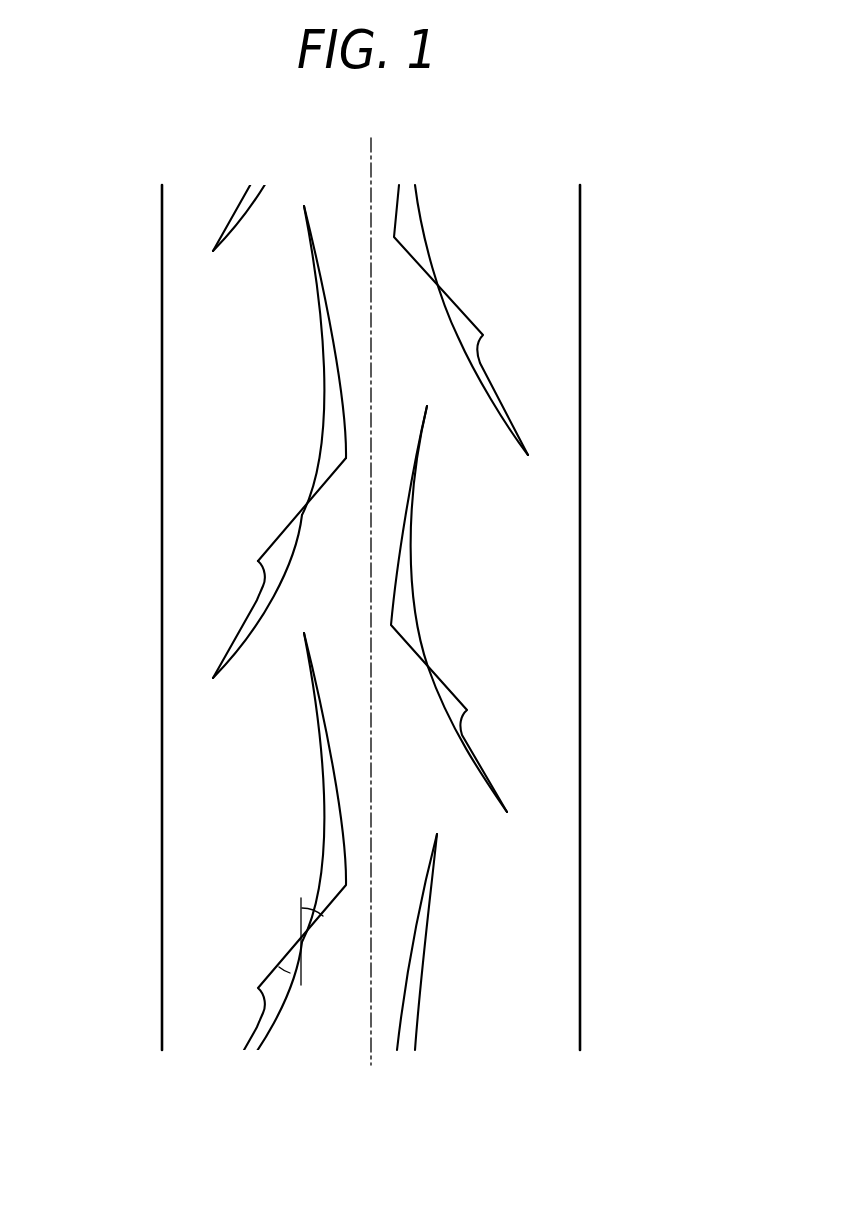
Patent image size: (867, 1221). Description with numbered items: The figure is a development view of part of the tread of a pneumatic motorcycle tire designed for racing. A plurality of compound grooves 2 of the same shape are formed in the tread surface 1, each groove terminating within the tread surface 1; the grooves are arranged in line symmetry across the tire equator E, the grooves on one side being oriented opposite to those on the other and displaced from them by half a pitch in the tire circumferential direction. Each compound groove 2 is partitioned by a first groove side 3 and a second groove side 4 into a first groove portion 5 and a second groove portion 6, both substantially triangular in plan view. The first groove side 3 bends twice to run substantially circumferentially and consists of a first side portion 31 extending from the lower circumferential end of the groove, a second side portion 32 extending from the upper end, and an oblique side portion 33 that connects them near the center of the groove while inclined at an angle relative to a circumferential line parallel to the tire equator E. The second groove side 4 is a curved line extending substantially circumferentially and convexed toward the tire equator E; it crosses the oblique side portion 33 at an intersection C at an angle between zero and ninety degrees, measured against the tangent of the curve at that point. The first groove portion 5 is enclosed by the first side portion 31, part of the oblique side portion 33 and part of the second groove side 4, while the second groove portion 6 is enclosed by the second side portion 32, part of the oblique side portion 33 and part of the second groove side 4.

The tread surface 1 is at (598, 311).
The compound groove 2 is at (455, 662).
The first groove side 3 is at (77, 307).
The first side portion 31 is at (257, 602).
The second side portion 32 is at (331, 321).
The oblique side portion 33 is at (283, 528).
The second groove side 4 is at (317, 472).
The first groove portion 5 is at (275, 560).
The second groove portion 6 is at (333, 430).
The intersection C is at (303, 511).
The tire equator E is at (370, 584).